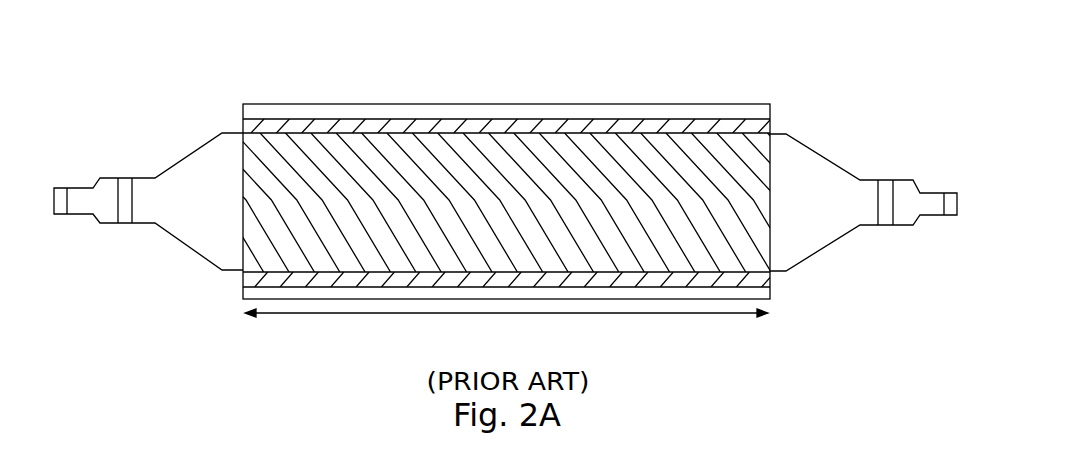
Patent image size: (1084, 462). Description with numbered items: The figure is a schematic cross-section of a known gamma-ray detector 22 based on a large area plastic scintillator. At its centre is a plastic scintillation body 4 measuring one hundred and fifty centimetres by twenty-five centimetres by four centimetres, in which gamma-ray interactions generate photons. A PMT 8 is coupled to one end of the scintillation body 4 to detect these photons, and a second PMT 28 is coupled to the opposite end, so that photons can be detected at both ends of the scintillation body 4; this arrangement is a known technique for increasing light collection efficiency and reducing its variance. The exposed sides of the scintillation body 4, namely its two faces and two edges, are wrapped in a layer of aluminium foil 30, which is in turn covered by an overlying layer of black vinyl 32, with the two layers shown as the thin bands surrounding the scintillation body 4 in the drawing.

The gamma-ray detector 22 is at (205, 80).
The scintillation body 4 is at (747, 152).
The PMT 8 is at (183, 247).
The second PMT 28 is at (833, 247).
The layer of aluminium foil 30 is at (460, 125).
The layer of black vinyl 32 is at (363, 110).